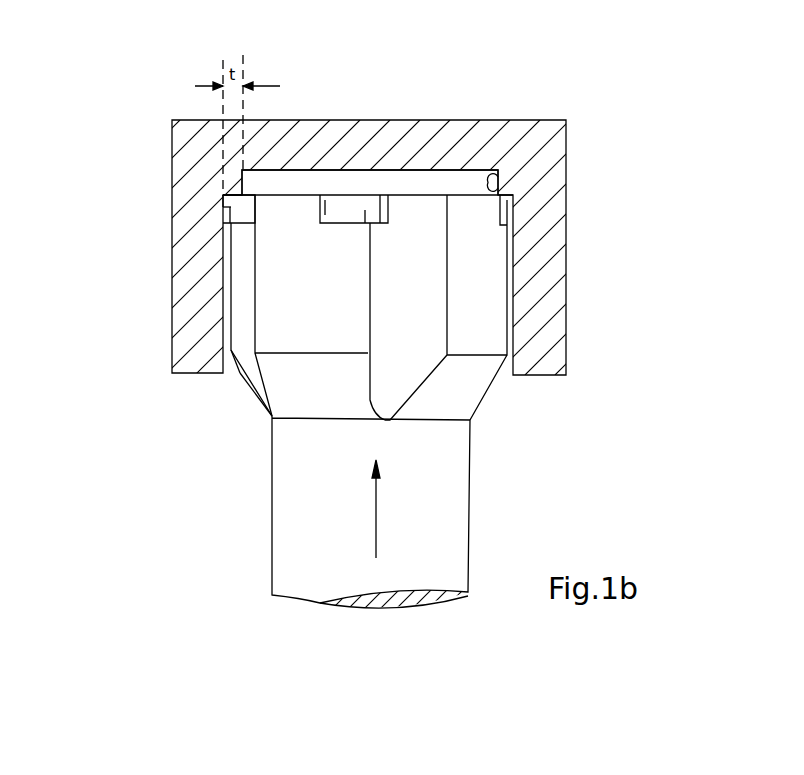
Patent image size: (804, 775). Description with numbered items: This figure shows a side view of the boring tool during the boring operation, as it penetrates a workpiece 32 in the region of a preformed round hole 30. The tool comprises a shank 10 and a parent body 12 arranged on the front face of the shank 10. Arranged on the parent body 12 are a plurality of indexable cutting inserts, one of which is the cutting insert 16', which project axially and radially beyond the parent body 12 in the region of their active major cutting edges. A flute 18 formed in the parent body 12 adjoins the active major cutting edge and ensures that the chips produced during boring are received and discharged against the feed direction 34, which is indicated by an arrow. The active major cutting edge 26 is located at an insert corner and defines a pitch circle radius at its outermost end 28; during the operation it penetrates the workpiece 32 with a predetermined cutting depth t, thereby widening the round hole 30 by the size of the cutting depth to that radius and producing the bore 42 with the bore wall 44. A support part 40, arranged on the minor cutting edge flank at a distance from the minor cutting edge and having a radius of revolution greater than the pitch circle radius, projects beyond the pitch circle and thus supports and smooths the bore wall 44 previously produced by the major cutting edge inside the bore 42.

The shank 10 is at (455, 525).
The parent body 12 is at (463, 383).
The cutting insert 16' is at (365, 140).
The flute 18 is at (417, 272).
The active major cutting edge 26 is at (223, 193).
The outermost end of the active major cutting edge 28 is at (225, 196).
The preformed round hole 30 is at (500, 187).
The workpiece 32 is at (487, 147).
The feed direction 34 is at (378, 516).
The support part 40 is at (225, 207).
The bore 42 is at (233, 380).
The bore wall 44 is at (256, 394).